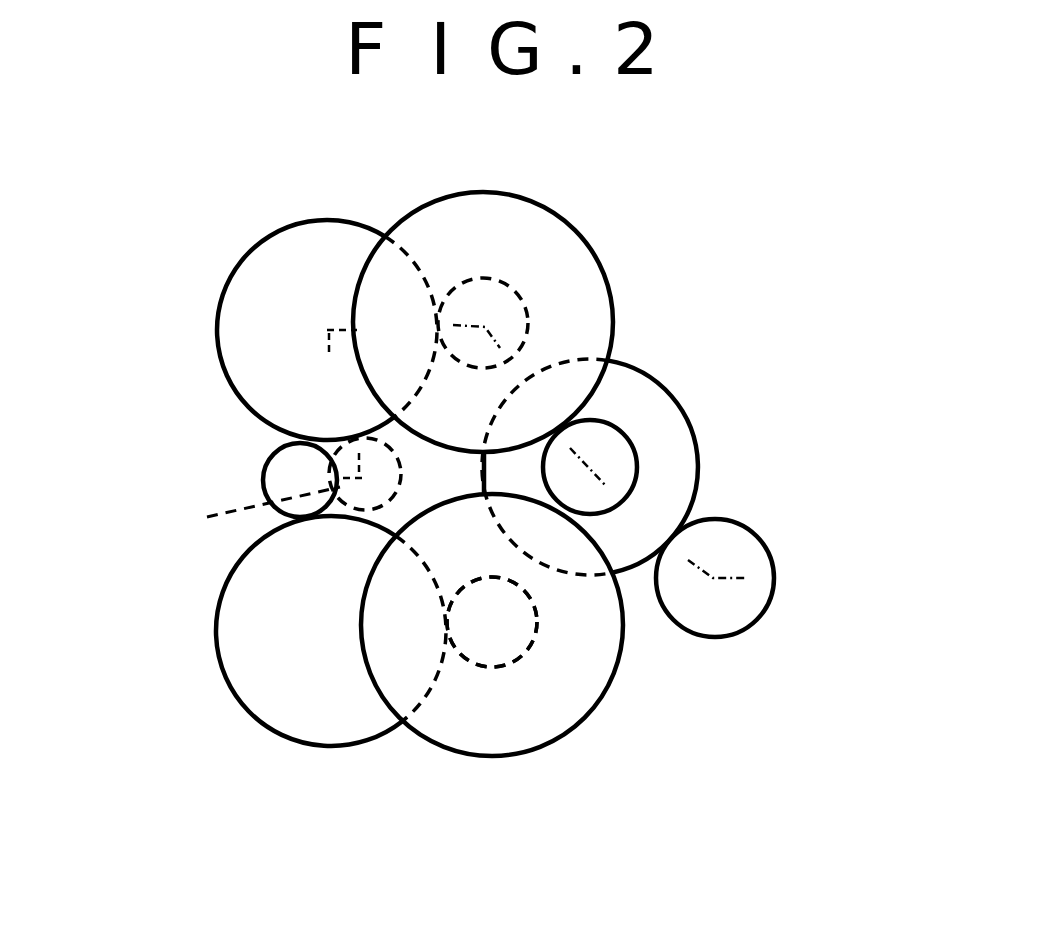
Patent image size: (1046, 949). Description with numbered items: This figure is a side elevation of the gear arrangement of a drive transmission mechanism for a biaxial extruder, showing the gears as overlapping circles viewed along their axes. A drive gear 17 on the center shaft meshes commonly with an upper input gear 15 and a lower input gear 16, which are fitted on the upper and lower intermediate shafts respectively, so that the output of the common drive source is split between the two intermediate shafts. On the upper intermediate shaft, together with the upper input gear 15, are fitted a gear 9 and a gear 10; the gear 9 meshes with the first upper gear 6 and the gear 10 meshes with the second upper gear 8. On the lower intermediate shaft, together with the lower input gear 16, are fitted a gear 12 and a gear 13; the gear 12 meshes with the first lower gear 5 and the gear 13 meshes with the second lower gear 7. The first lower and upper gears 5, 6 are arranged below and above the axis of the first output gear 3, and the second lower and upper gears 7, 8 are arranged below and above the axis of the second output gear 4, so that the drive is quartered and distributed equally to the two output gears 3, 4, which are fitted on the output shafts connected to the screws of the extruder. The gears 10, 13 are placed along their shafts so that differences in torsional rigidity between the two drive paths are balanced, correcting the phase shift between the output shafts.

The first output gear 3 is at (155, 430).
The second output gear 4 is at (272, 452).
The first lower gear 5 is at (239, 628).
The first upper gear 6 is at (257, 288).
The second lower gear 7 is at (216, 614).
The second upper gear 8 is at (277, 237).
The gear 9 is at (619, 284).
The gear 10 is at (518, 295).
The gear 12 is at (586, 689).
The gear 13 is at (508, 665).
The upper input gear 15 is at (570, 223).
The lower input gear 16 is at (608, 687).
The drive gear 17 is at (628, 438).